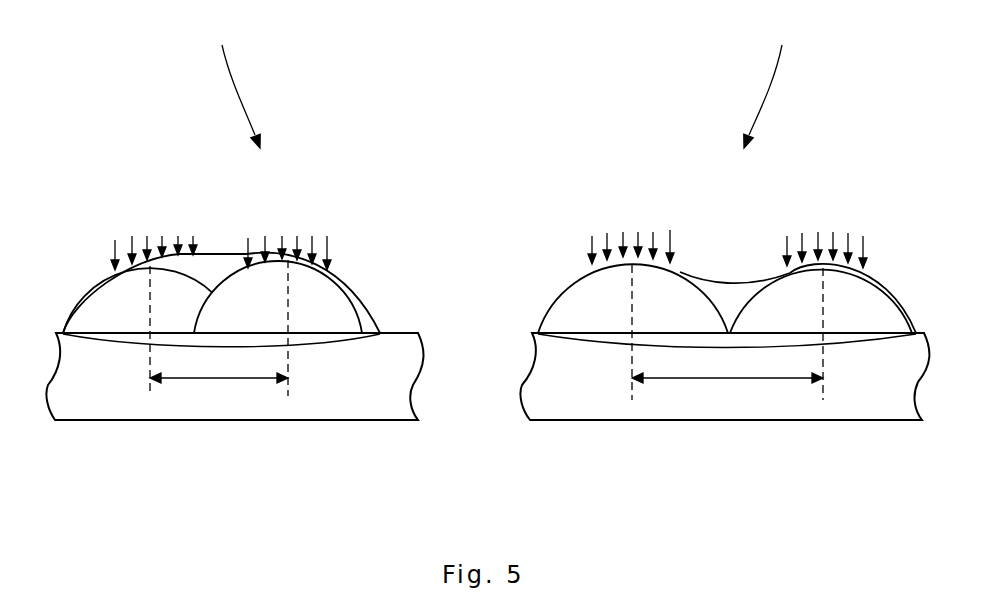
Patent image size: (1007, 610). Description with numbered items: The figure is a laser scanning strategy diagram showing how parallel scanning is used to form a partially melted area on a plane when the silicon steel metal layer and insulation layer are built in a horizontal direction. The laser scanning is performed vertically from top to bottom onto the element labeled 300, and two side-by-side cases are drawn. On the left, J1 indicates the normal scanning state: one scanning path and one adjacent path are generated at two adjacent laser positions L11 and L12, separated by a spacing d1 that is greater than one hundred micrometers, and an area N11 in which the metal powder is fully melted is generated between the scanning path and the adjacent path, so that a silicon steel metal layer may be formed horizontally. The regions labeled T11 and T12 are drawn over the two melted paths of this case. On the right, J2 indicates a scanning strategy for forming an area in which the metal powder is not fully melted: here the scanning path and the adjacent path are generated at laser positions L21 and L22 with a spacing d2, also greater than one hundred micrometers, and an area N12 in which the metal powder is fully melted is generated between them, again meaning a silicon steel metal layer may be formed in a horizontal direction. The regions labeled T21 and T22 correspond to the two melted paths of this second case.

The substrate 300 is at (392, 409).
The first thin film layer on first droplet T11 is at (82, 307).
The thin film layer on second droplet T12 is at (338, 310).
The thin film layer on first droplet (second jet) T21 is at (560, 308).
The thin film layer on second droplet (second jet) T22 is at (876, 310).
The area in which the metal powder is fully melted N11 is at (220, 253).
The area in which the metal powder is fully melted N12 is at (722, 288).
The laser position L11 is at (154, 293).
The laser position L12 is at (287, 293).
The laser position L21 is at (631, 295).
The laser position L22 is at (825, 295).
The normal scanning state J1 is at (234, 79).
The scanning strategy for forming an area in which metal powder is not fully melted J2 is at (771, 79).
The spacing between adjacent laser scanning paths d1 is at (219, 393).
The spacing between adjacent laser scanning paths d2 is at (727, 393).